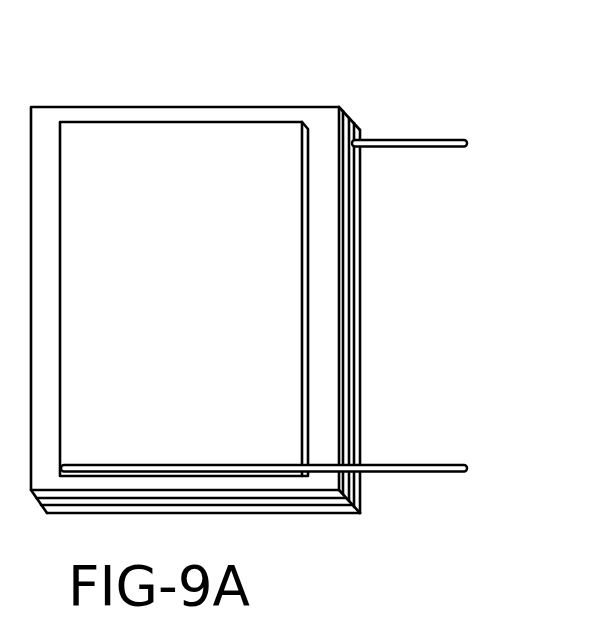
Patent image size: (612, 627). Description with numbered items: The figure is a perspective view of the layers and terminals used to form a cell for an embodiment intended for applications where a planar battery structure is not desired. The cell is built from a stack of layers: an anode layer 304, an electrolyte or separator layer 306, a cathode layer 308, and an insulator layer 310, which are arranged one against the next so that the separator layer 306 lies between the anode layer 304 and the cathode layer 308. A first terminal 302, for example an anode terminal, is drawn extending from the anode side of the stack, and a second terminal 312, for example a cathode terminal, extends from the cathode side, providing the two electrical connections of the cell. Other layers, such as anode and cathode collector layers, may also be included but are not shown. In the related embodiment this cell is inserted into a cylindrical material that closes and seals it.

The first terminal 302 is at (423, 466).
The anode layer 304 is at (94, 147).
The electrolyte or separator layer 306 is at (330, 378).
The cathode layer 308 is at (352, 278).
The insulator layer 310 is at (362, 223).
The second terminal 312 is at (413, 139).